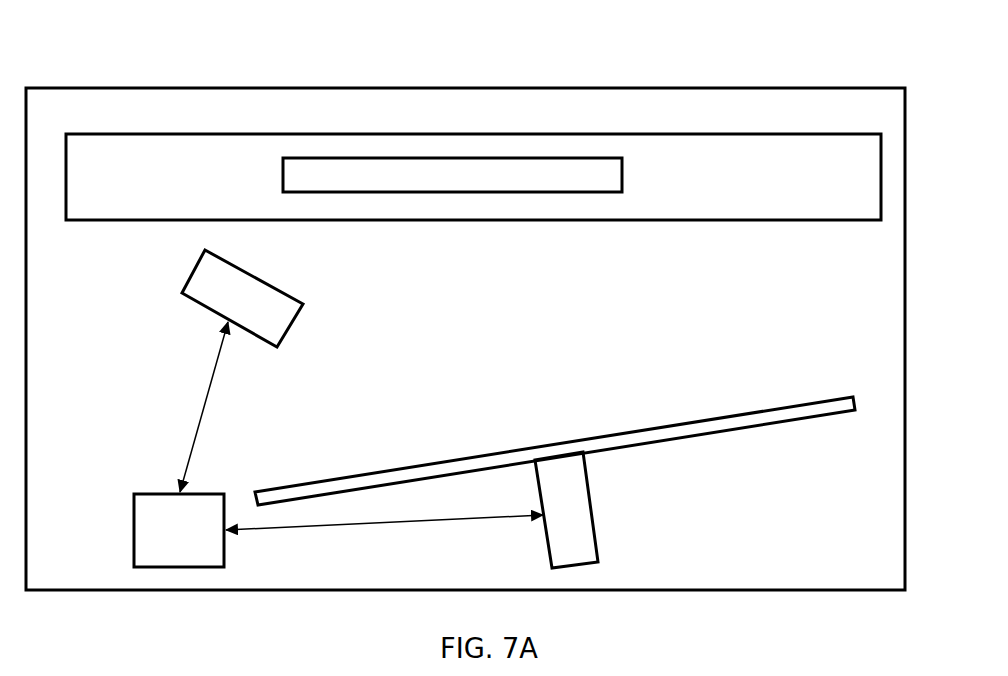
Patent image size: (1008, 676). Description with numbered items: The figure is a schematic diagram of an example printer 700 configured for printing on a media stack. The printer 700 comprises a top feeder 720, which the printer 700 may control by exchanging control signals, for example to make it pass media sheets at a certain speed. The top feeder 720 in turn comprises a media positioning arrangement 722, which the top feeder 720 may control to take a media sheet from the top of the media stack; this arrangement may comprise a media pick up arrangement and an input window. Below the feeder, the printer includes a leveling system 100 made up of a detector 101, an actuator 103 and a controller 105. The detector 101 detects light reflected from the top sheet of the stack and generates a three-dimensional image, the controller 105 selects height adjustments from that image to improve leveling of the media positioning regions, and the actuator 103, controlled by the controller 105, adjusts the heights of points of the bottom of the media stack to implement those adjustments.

The printer 700 is at (157, 87).
The top feeder 720 is at (473, 130).
The media positioning arrangement 722 is at (626, 175).
The leveling system 100 is at (173, 404).
The detector 101 is at (299, 328).
The actuator 103 is at (598, 503).
The controller 105 is at (180, 571).